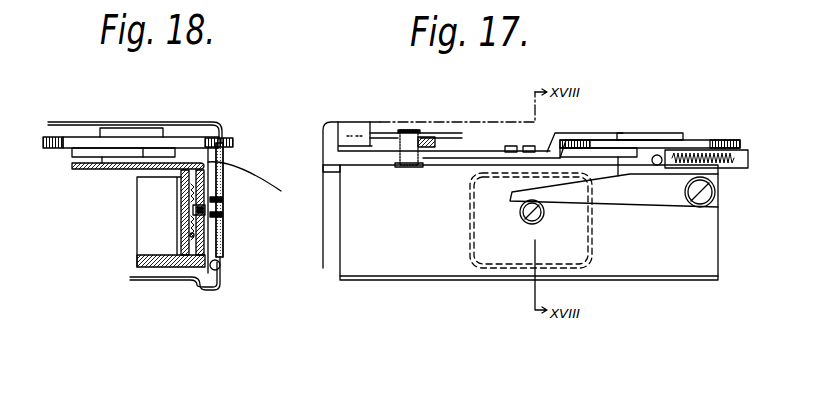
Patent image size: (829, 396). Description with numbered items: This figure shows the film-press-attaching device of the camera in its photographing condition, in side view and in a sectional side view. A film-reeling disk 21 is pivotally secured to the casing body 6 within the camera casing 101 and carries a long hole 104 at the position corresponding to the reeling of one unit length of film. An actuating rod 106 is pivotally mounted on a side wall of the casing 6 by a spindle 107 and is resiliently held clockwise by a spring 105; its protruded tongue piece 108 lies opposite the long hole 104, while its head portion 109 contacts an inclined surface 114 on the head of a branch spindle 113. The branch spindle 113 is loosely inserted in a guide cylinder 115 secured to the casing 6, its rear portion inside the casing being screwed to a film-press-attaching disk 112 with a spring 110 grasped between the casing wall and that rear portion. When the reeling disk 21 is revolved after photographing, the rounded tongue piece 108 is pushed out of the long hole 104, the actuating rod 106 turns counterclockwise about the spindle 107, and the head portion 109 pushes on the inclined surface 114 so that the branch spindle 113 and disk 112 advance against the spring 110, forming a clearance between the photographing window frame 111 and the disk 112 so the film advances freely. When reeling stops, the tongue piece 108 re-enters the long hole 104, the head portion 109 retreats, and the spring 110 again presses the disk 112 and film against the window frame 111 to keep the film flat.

In FIG. 18, the casing body 6 is at (93, 169).
In FIG. 17, the casing body 6 is at (707, 248).
In FIG. 18, the film-reeling disk 21 is at (207, 138).
In FIG. 17, the film-reeling disk 21 is at (702, 147).
In FIG. 18, the camera casing 101 is at (145, 127).
In FIG. 17, the camera casing 101 is at (410, 127).
In FIG. 18, the long hole 104 is at (220, 141).
In FIG. 17, the spring 105 is at (733, 143).
In FIG. 18, the actuating rod 106 is at (258, 181).
In FIG. 17, the actuating rod 106 is at (630, 200).
In FIG. 17, the spindle 107 is at (713, 201).
In FIG. 18, the tongue piece 108 is at (224, 145).
In FIG. 17, the tongue piece 108 is at (642, 157).
In FIG. 18, the head portion 109 is at (207, 184).
In FIG. 17, the head portion 109 is at (515, 192).
In FIG. 18, the spring 110 is at (212, 240).
In FIG. 18, the photographing window frame 111 is at (176, 193).
In FIG. 18, the film-press-attaching disk 112 is at (198, 234).
In FIG. 17, the film-press-attaching disk 112 is at (482, 246).
In FIG. 18, the branch spindle 113 is at (207, 206).
In FIG. 17, the branch spindle 113 is at (533, 223).
In FIG. 18, the inclined surface 114 is at (222, 199).
In FIG. 18, the guide cylinder 115 is at (209, 224).